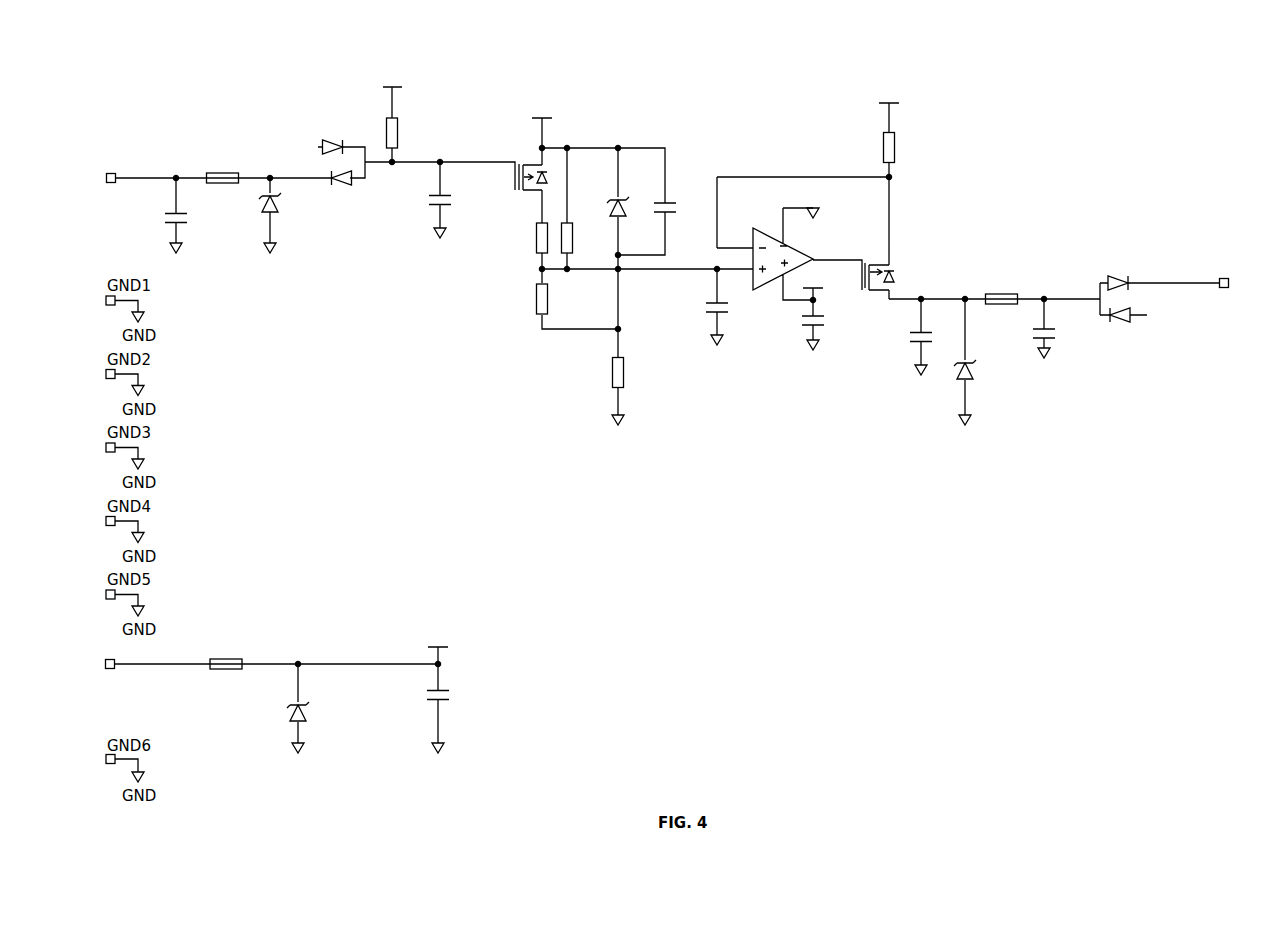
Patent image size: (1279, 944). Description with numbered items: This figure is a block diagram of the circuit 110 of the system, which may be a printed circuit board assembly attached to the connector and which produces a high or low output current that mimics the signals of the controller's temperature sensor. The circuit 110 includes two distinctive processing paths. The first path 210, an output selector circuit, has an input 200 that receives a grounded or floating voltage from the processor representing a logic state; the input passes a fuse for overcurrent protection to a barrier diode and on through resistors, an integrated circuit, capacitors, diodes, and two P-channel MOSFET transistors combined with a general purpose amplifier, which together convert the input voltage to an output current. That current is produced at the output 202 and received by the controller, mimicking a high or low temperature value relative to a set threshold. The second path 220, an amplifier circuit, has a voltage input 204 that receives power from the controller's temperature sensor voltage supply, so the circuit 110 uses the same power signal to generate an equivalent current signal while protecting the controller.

The circuit 110 is at (840, 550).
The input 200 is at (108, 185).
The output 202 is at (1226, 290).
The voltage input 204 is at (108, 671).
The first path 210 is at (653, 423).
The second path 220 is at (488, 723).